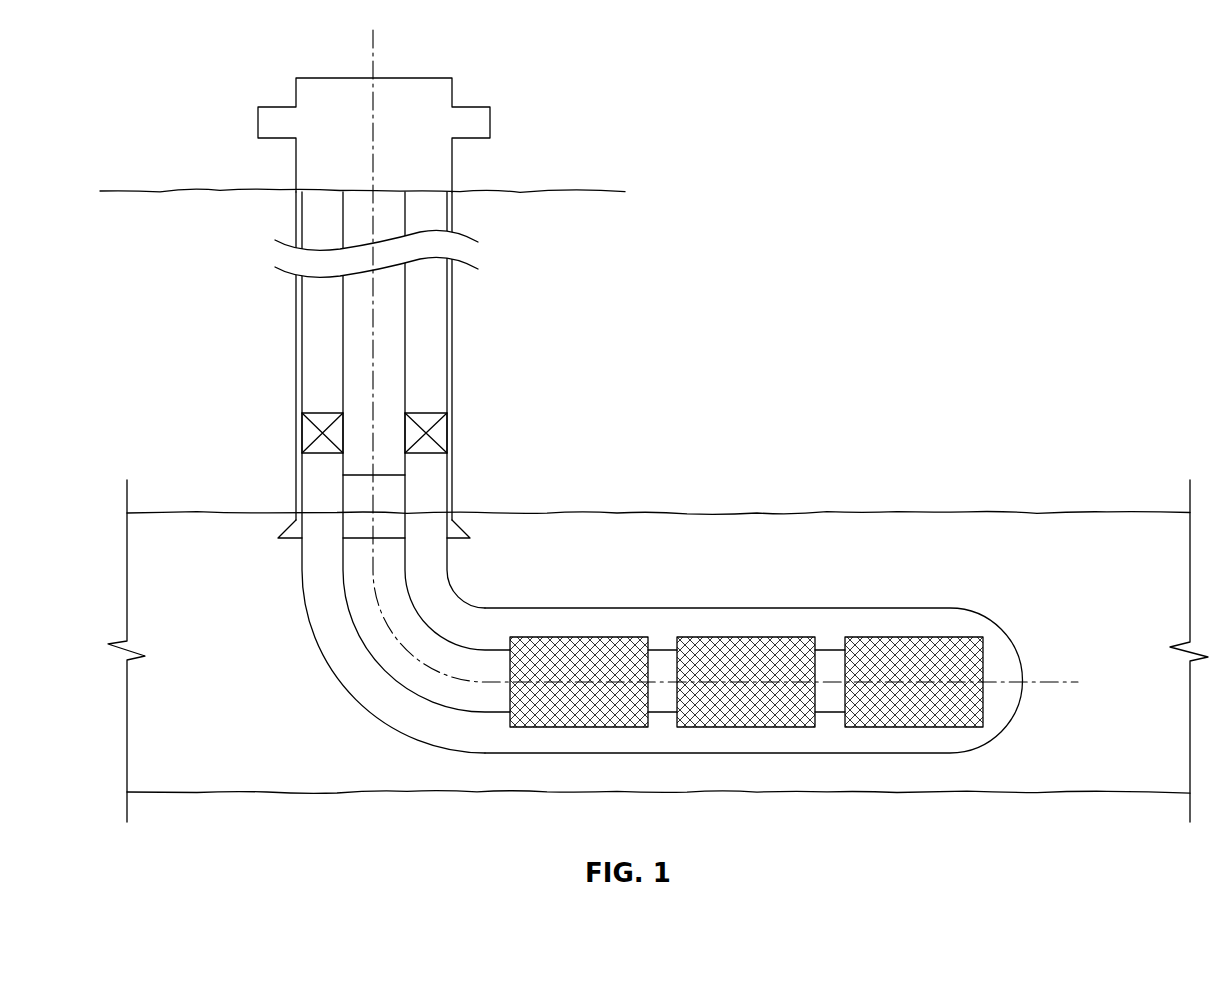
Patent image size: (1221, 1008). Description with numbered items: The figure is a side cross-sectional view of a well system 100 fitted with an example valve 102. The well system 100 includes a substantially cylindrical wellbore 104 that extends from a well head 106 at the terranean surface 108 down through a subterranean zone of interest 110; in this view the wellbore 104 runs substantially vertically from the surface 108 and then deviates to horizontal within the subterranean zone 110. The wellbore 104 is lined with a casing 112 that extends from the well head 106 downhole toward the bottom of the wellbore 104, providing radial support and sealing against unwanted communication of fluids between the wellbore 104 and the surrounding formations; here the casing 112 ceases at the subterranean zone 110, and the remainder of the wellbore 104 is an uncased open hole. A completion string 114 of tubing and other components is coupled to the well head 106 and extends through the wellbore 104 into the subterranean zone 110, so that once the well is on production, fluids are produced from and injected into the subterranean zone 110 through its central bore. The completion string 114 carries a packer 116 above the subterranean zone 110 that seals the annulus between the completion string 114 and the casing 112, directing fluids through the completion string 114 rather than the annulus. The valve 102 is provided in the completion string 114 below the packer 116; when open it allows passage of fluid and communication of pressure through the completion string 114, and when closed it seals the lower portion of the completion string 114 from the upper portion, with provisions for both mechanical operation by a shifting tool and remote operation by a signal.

The well system 100 is at (785, 146).
The valve 102 is at (388, 512).
The wellbore 104 is at (468, 604).
The well head 106 is at (480, 124).
The terranean surface 108 is at (550, 190).
The subterranean zone of interest 110 is at (866, 562).
The casing 112 is at (447, 345).
The completion string 114 is at (405, 313).
The packer 116 is at (437, 435).